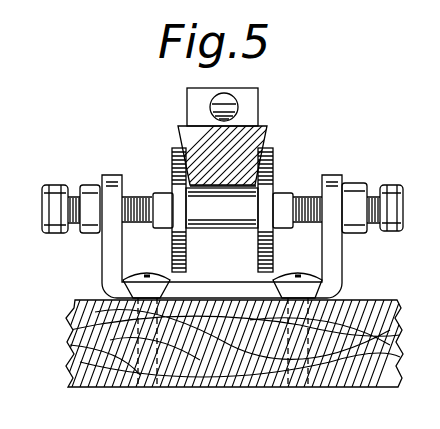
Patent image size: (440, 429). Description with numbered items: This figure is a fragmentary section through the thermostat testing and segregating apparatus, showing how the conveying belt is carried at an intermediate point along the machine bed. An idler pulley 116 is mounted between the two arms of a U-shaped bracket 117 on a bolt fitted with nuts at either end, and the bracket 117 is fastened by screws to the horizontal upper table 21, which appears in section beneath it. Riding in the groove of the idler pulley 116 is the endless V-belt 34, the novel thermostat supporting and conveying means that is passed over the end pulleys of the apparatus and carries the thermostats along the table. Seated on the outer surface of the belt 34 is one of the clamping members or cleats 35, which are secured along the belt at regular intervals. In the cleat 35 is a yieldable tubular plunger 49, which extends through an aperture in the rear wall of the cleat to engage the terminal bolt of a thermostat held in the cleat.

The upper table 21 is at (372, 300).
The endless V-belt 34 is at (268, 133).
The clamping member or cleat 35 is at (179, 86).
The yieldable tubular plunger 49 is at (238, 101).
The idler pulley 116 is at (287, 160).
The bracket 117 is at (110, 256).